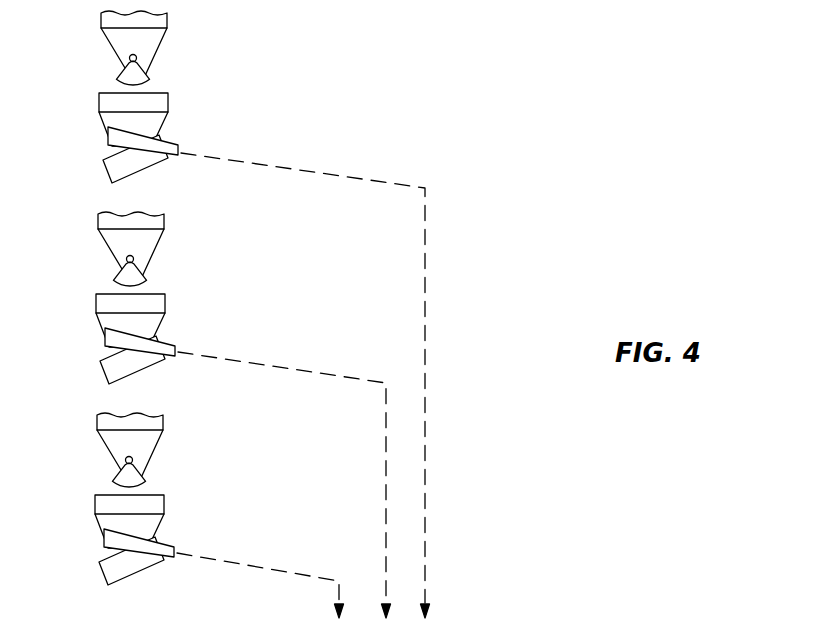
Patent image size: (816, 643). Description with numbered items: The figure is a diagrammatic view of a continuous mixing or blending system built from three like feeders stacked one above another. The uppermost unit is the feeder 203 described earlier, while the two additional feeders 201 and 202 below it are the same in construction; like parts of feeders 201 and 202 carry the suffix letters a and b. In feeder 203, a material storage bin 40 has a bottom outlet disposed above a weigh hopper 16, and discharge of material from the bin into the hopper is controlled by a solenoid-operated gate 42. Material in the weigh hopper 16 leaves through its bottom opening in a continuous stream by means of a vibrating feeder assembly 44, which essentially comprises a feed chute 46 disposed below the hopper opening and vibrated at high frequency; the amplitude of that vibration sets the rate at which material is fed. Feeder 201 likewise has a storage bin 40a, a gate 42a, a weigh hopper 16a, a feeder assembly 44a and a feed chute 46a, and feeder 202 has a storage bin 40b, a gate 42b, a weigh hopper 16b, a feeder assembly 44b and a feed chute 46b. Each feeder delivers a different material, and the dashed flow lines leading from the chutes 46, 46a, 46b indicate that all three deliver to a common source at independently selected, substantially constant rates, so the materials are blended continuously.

The feeder 203 is at (82, 88).
The feeder 201 is at (120, 302).
The feeder 202 is at (119, 503).
The material storage bin 40 is at (158, 36).
The solenoid-operated gate 42 is at (143, 77).
The weigh hopper 16 is at (168, 104).
The vibrating feeder assembly 44 is at (117, 168).
The feed chute 46 is at (167, 148).
The material storage bin 40a is at (151, 245).
The solenoid-operated gate 42a is at (155, 271).
The weigh hopper 16a is at (153, 318).
The vibrating feeder assembly 44a is at (111, 364).
The feed chute 46a is at (160, 339).
The material storage bin 40b is at (150, 446).
The solenoid-operated gate 42b is at (154, 472).
The weigh hopper 16b is at (152, 519).
The vibrating feeder assembly 44b is at (110, 565).
The feed chute 46b is at (159, 540).